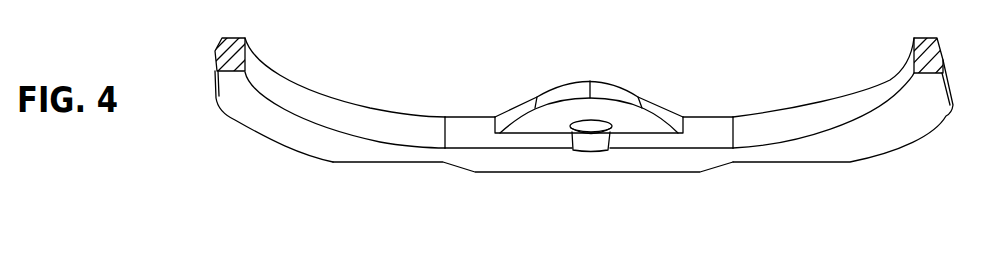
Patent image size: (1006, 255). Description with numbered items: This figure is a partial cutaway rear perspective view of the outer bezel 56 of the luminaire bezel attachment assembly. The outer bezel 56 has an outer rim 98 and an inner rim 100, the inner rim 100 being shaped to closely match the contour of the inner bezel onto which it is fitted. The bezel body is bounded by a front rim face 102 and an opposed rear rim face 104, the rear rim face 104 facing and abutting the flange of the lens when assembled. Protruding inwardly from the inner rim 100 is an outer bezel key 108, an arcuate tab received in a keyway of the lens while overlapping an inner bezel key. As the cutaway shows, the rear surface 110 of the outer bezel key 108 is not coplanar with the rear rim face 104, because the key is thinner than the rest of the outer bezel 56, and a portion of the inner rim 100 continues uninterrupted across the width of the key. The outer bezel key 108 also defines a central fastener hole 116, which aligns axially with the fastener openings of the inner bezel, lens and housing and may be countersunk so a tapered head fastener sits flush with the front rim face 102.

The outer bezel 56 is at (870, 142).
The outer rim 98 is at (398, 163).
The inner rim 100 is at (352, 117).
The front rim face 102 is at (297, 82).
The rear rim face 104 is at (277, 127).
The outer bezel key 108 is at (557, 95).
The rear surface 110 is at (632, 125).
The central fastener hole 116 is at (595, 151).